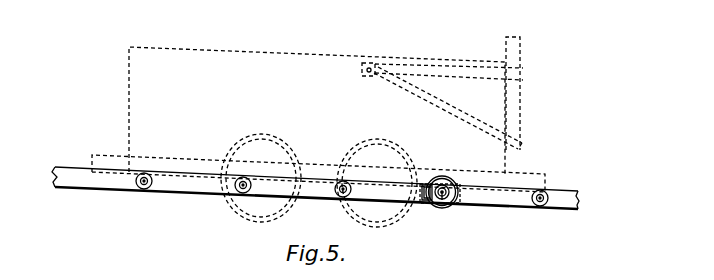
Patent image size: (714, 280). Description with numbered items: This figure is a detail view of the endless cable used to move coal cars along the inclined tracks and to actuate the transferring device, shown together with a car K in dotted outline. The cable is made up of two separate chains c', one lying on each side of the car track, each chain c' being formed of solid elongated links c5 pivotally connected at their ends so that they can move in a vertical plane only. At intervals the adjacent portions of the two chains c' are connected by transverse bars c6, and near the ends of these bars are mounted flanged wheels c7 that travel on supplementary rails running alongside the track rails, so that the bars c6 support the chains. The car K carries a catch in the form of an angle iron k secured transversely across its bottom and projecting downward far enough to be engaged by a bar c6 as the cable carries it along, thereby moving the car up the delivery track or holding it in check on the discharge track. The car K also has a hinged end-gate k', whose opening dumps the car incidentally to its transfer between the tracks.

The car K is at (324, 105).
The angle iron k is at (442, 180).
The end-gate k' is at (453, 106).
The chain c' is at (314, 167).
The elongated link c5 is at (317, 191).
The transverse bar c6 is at (425, 204).
The flanged wheel c7 is at (443, 209).